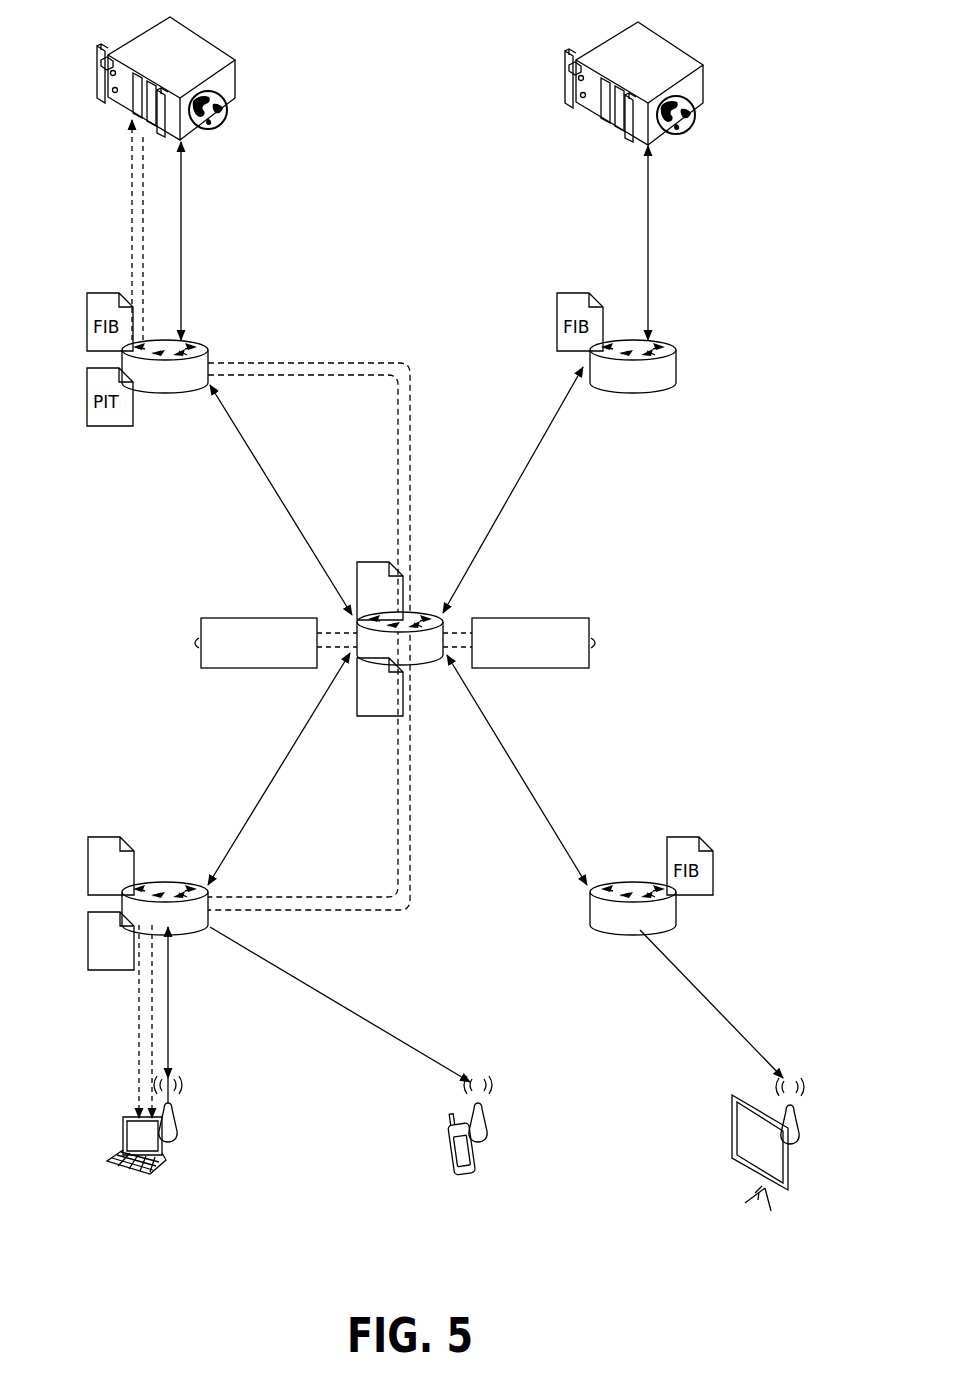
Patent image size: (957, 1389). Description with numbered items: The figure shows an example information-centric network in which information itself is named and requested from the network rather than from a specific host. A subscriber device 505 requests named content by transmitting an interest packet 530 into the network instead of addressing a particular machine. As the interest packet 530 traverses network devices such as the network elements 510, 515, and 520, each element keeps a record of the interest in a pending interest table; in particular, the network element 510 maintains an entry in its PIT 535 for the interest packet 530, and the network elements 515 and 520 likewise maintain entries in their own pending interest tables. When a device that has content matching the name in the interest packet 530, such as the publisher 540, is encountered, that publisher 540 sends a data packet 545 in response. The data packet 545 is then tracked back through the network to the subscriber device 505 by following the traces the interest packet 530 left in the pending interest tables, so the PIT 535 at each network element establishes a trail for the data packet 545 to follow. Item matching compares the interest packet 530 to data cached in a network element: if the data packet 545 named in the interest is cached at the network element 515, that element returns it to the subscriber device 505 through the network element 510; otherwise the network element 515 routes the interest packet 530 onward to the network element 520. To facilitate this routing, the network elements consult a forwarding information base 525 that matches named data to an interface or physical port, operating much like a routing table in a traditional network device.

The device 505 is at (124, 1118).
The network element 510 is at (180, 926).
The network element 515 is at (418, 657).
The network element 520 is at (208, 346).
The forwarding information base 525 is at (88, 868).
The interest packet 530 is at (258, 618).
The pending interest table 535 is at (88, 940).
The publisher 540 is at (137, 52).
The data packet 545 is at (535, 618).